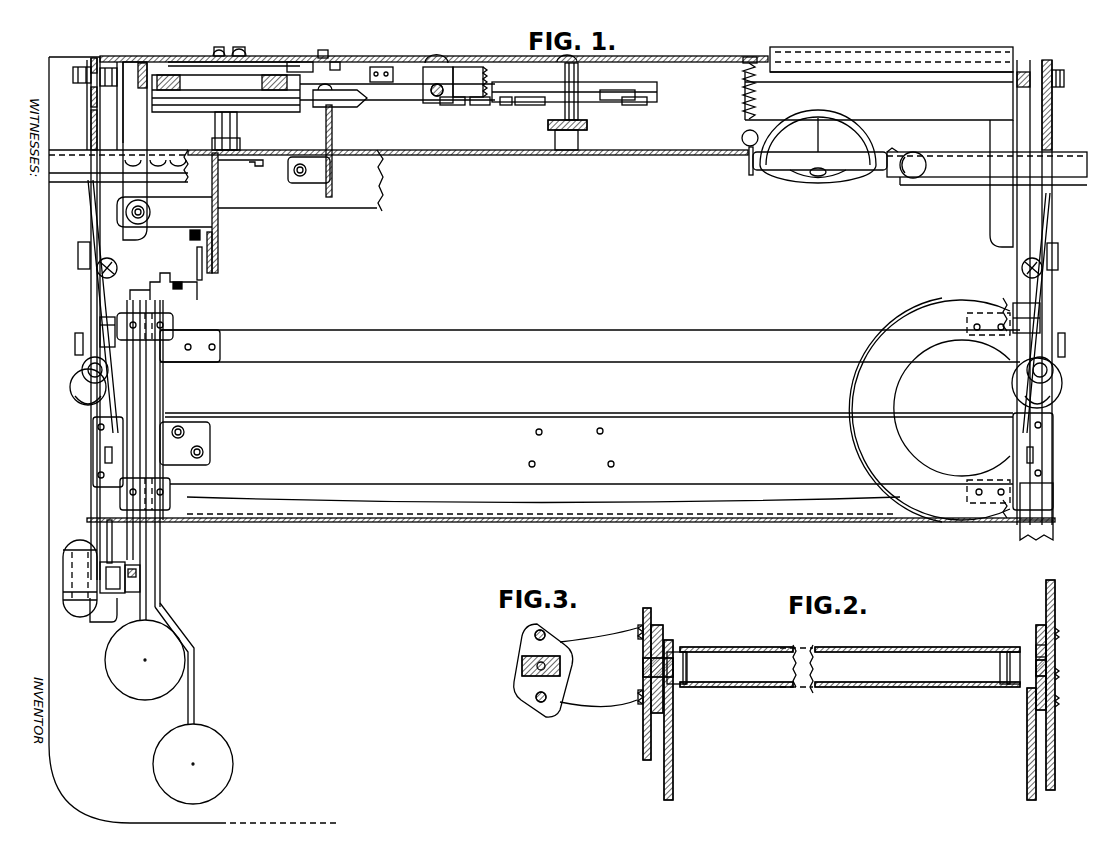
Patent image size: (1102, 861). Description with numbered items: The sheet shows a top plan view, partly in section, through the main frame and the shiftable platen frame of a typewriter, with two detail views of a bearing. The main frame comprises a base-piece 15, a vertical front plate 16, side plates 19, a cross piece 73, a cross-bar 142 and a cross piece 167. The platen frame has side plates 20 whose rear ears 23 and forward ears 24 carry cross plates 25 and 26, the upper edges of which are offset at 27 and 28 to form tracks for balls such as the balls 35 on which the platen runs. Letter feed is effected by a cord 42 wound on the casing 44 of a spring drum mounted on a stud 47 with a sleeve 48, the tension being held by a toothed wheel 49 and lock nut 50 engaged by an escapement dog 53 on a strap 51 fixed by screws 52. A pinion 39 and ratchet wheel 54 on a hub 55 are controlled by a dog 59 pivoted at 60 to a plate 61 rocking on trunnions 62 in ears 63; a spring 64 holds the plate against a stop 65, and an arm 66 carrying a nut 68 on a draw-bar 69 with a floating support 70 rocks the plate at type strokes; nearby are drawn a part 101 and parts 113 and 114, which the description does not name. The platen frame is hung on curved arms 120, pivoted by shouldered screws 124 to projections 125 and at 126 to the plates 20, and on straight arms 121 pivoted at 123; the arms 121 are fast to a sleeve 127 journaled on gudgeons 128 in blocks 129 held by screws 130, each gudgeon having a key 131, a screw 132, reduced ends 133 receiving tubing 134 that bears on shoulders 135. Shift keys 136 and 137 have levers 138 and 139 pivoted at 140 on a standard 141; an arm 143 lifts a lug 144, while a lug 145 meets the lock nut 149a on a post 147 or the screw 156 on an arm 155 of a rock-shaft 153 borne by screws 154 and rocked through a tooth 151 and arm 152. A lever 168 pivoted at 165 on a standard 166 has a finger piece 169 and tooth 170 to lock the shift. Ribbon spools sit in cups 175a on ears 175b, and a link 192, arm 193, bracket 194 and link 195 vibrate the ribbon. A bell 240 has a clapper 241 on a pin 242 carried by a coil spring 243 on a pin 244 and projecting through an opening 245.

In FIG. 1, the base-piece 15 is at (49, 485).
In FIG. 1, the vertical front plate 16 is at (890, 522).
In FIG. 1, the side plates 19 is at (91, 229).
In FIG. 3, the side plates 19 is at (643, 745).
In FIG. 2, the side plates 19 is at (1051, 755).
In FIG. 1, the side plates 20 is at (145, 237).
In FIG. 1, the ears 23 is at (140, 74).
In FIG. 1, the ears 24 is at (170, 150).
In FIG. 1, the cross plate 25 is at (672, 60).
In FIG. 1, the cross plate 26 is at (620, 156).
In FIG. 1, the offset 27 is at (900, 48).
In FIG. 1, the offset 28 is at (945, 180).
In FIG. 1, the balls 35 is at (927, 165).
In FIG. 1, the pinion 39 is at (588, 125).
In FIG. 1, the cord 42 is at (290, 106).
In FIG. 1, the casing 44 is at (180, 82).
In FIG. 1, the stud 47 is at (255, 127).
In FIG. 1, the sleeve 48 is at (240, 50).
In FIG. 1, the toothed wheel 49 is at (196, 63).
In FIG. 1, the lock nut 50 is at (216, 50).
In FIG. 1, the strap 51 is at (335, 62).
In FIG. 1, the screws 52 is at (295, 62).
In FIG. 1, the escapement dog 53 is at (323, 50).
In FIG. 1, the ratchet wheel 54 is at (542, 106).
In FIG. 1, the hub 55 is at (563, 108).
In FIG. 1, the dog 59 is at (483, 106).
In FIG. 1, the pivot 60 is at (468, 74).
In FIG. 1, the plate 61 is at (430, 100).
In FIG. 1, the trunnions 62 is at (452, 106).
In FIG. 1, the ears 63 is at (456, 70).
In FIG. 1, the spring 64 is at (488, 82).
In FIG. 1, the stop 65 is at (372, 70).
In FIG. 1, the arm 66 is at (405, 104).
In FIG. 1, the nut 68 is at (350, 92).
In FIG. 1, the draw-bar 69 is at (330, 188).
In FIG. 1, the floating support 70 is at (333, 165).
In FIG. 1, the cross piece 73 is at (378, 212).
In FIG. 1, the block 101 is at (506, 106).
In FIG. 1, the arm 113 is at (594, 90).
In FIG. 1, the arm 114 is at (640, 101).
In FIG. 1, the arms 120 is at (95, 430).
In FIG. 1, the arms 121 is at (100, 240).
In FIG. 3, the arms 121 is at (673, 776).
In FIG. 2, the arms 121 is at (1027, 771).
In FIG. 1, the pivot 123 is at (100, 325).
In FIG. 1, the shouldered screws 124 is at (80, 84).
In FIG. 1, the upward projections 125 is at (95, 62).
In FIG. 1, the pivot 126 is at (105, 455).
In FIG. 2, the sleeve 127 is at (886, 688).
In FIG. 3, the gudgeons 128 is at (690, 688).
In FIG. 2, the gudgeons 128 is at (1005, 686).
In FIG. 3, the blocks 129 is at (516, 688).
In FIG. 2, the blocks 129 is at (1036, 626).
In FIG. 3, the screws 130 is at (640, 627).
In FIG. 3, the key 131 is at (558, 672).
In FIG. 2, the key 131 is at (1048, 652).
In FIG. 3, the screw 132 is at (643, 666).
In FIG. 2, the screw 132 is at (1048, 672).
In FIG. 3, the reduced ends 133 is at (690, 652).
In FIG. 2, the tubing 134 is at (880, 650).
In FIG. 3, the shoulders 135 is at (688, 668).
In FIG. 2, the shoulders 135 is at (1007, 668).
In FIG. 1, the key 136 is at (114, 694).
In FIG. 1, the key 137 is at (233, 770).
In FIG. 1, the key lever 138 is at (150, 600).
In FIG. 1, the key lever 139 is at (175, 633).
In FIG. 1, the pivot 140 is at (150, 438).
In FIG. 1, the standard 141 is at (210, 440).
In FIG. 1, the cross-bar 142 is at (410, 366).
In FIG. 1, the arm 143 is at (178, 282).
In FIG. 1, the lug 144 is at (137, 298).
In FIG. 1, the lug 145 is at (85, 404).
In FIG. 1, the post 147 is at (82, 370).
In FIG. 1, the lock nut 149a is at (75, 386).
In FIG. 1, the tooth 151 is at (183, 287).
In FIG. 1, the arm 152 is at (173, 320).
In FIG. 1, the rock-shaft 153 is at (265, 342).
In FIG. 1, the screws 154 is at (75, 343).
In FIG. 1, the arm 155 is at (78, 256).
In FIG. 1, the screw 156 is at (98, 272).
In FIG. 1, the pivot 165 is at (135, 570).
In FIG. 1, the standard 166 is at (130, 562).
In FIG. 1, the cross piece 167 is at (95, 627).
In FIG. 1, the lever 168 is at (109, 560).
In FIG. 1, the finger piece 169 is at (63, 565).
In FIG. 1, the tooth 170 is at (142, 580).
In FIG. 1, the cups 175a is at (895, 440).
In FIG. 1, the ears 175b is at (120, 494).
In FIG. 1, the link 192 is at (203, 277).
In FIG. 1, the arm 193 is at (212, 246).
In FIG. 1, the bracket 194 is at (218, 168).
In FIG. 1, the link 195 is at (190, 220).
In FIG. 1, the bell 240 is at (866, 180).
In FIG. 1, the clapper 241 is at (742, 138).
In FIG. 1, the pin 242 is at (749, 165).
In FIG. 1, the coil spring 243 is at (744, 95).
In FIG. 1, the pin 244 is at (746, 60).
In FIG. 1, the opening 245 is at (790, 172).